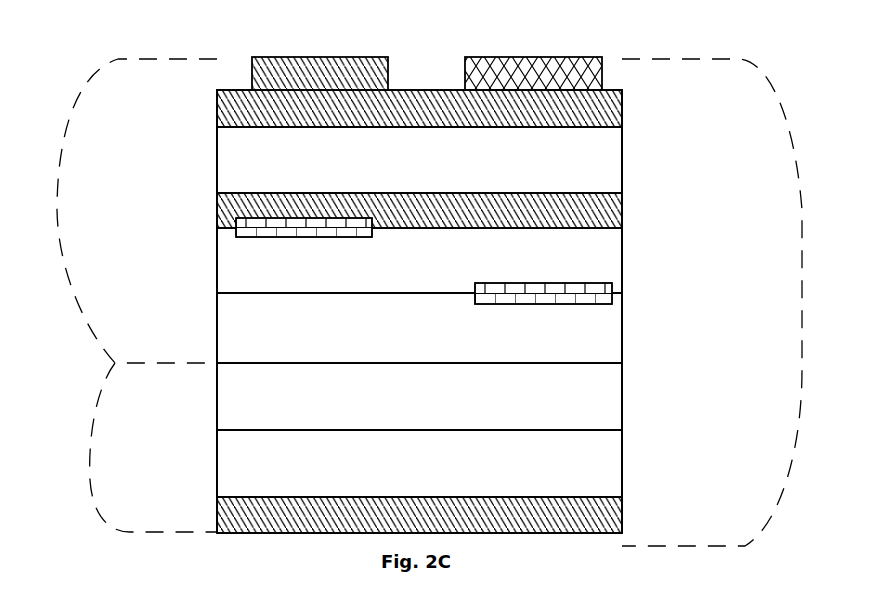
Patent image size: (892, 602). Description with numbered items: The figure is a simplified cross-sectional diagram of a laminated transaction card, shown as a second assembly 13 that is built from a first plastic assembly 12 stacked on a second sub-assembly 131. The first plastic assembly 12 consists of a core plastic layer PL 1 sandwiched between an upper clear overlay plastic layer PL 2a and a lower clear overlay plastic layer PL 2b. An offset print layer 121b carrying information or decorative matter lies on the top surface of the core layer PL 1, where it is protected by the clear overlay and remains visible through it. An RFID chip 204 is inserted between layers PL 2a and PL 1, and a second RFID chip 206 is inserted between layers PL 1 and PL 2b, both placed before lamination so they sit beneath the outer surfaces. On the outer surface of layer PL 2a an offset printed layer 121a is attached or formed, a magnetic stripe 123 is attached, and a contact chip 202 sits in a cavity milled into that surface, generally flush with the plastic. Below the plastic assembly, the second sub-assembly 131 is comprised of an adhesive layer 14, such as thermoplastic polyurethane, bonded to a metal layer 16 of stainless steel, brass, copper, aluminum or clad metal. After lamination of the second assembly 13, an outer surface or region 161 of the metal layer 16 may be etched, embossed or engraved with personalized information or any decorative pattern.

The first plastic assembly 12 is at (57, 205).
The second assembly 13 is at (811, 293).
The second sub-assembly 131 is at (83, 443).
The magnetic stripe 123 is at (268, 57).
The contact chip 202 is at (482, 57).
The offset printed layer 121a is at (622, 110).
The offset print layer 121b is at (622, 210).
The clear overlay plastic layer PL 2a is at (622, 159).
The core plastic layer PL 1 is at (622, 245).
The clear overlay plastic layer PL 2b is at (622, 328).
The RFID chip 204 is at (236, 233).
The RFID chip 206 is at (612, 293).
The adhesive layer 14 is at (622, 397).
The metal layer 16 is at (622, 441).
The outer surface or region of metal layer 161 is at (622, 522).